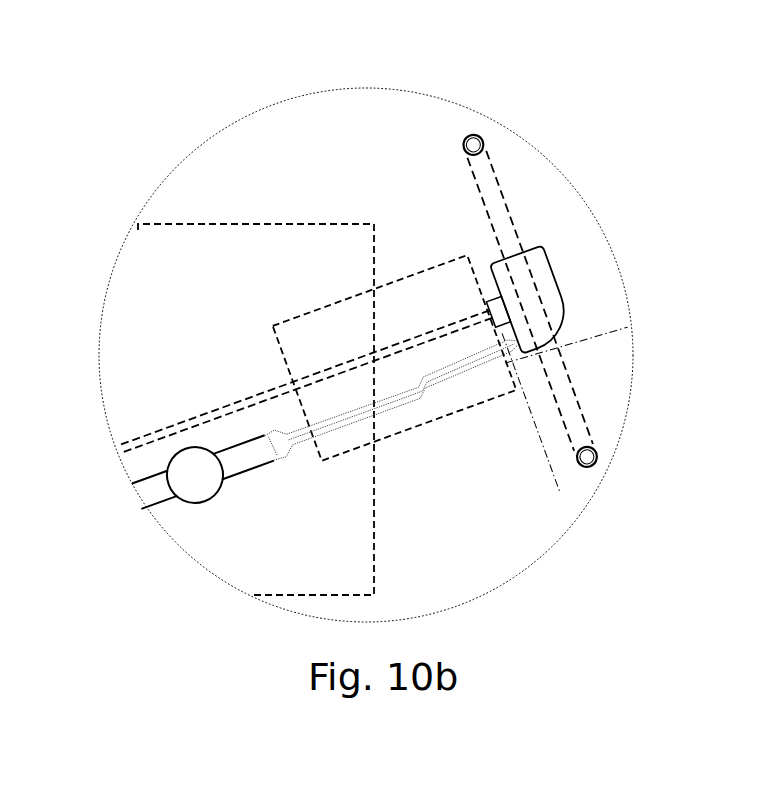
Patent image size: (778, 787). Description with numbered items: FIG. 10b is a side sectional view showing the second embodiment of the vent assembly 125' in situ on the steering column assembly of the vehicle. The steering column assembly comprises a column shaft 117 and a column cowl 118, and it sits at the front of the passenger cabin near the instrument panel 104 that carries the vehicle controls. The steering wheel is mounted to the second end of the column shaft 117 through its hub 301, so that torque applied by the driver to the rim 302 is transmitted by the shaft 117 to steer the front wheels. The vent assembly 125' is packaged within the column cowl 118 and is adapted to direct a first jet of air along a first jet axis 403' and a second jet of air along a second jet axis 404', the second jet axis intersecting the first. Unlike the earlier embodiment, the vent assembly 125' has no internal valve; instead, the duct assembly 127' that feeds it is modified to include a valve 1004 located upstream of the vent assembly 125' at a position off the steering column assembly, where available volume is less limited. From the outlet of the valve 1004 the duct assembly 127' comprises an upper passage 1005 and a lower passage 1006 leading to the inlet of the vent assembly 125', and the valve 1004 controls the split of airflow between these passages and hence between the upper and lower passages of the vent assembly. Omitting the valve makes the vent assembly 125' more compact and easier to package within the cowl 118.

The instrument panel 104 is at (235, 225).
The column shaft 117 is at (188, 422).
The column cowl 118 is at (433, 267).
The vent assembly 125' is at (439, 485).
The duct assembly 127' is at (112, 542).
The hub 301 is at (542, 270).
The rim 302 is at (475, 143).
The first jet axis 403' is at (596, 393).
The second jet axis 404' is at (624, 488).
The valve 1004 is at (197, 482).
The upper passage 1005 is at (243, 448).
The lower passage 1006 is at (245, 463).